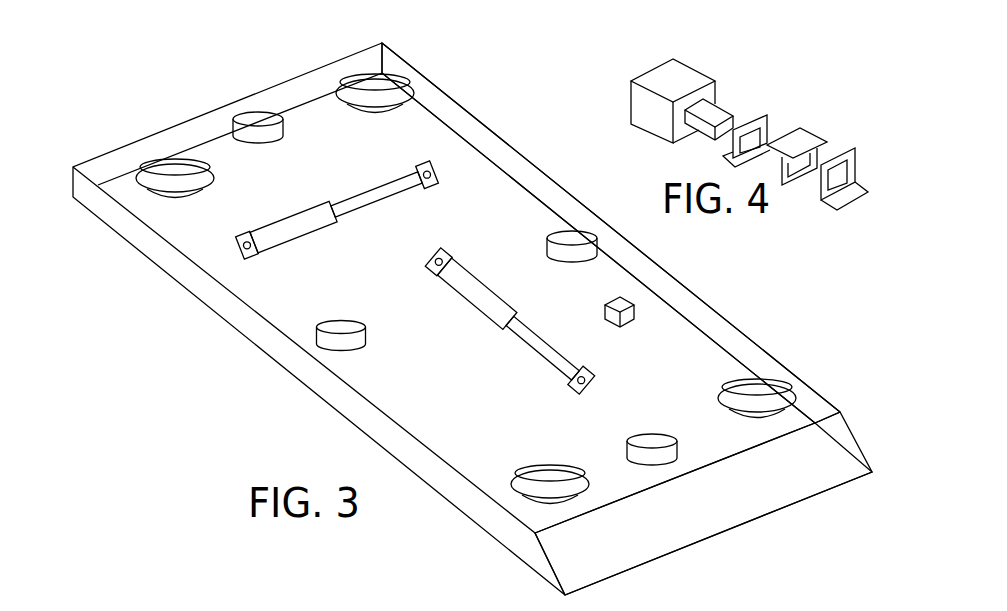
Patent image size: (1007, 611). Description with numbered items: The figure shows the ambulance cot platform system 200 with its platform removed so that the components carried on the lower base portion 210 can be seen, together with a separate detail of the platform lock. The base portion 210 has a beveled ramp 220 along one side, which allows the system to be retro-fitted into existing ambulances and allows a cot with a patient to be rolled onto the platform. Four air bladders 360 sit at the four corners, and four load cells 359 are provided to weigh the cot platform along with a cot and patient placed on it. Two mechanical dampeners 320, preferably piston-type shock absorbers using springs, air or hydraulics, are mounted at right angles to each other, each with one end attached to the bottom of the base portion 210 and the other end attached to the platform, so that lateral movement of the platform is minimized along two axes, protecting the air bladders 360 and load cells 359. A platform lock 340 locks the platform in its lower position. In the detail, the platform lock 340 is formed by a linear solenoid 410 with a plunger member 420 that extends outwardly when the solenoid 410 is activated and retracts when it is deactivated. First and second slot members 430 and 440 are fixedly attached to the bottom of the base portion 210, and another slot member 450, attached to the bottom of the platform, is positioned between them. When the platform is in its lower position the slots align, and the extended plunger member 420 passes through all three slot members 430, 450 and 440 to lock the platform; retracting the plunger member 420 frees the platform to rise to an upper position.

In FIG. 3, the ambulance cot platform system 200 is at (504, 98).
In FIG. 3, the base portion 210 is at (770, 354).
In FIG. 3, the beveled ramp 220 is at (728, 513).
In FIG. 3, the mechanical dampeners 320 is at (448, 288).
In FIG. 3, the platform lock 340 is at (603, 313).
In FIG. 3, the load cells 359 is at (262, 142).
In FIG. 3, the air bladders 360 is at (373, 112).
In FIG. 4, the linear solenoid 410 is at (687, 66).
In FIG. 4, the plunger member 420 is at (718, 107).
In FIG. 4, the first slot member 430 is at (770, 120).
In FIG. 4, the slot member 450 is at (813, 138).
In FIG. 4, the second slot member 440 is at (855, 147).